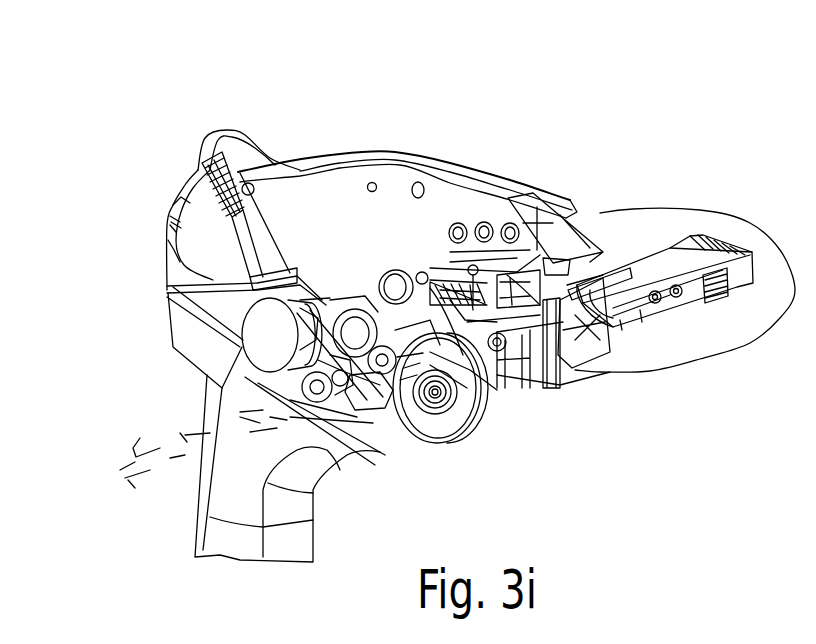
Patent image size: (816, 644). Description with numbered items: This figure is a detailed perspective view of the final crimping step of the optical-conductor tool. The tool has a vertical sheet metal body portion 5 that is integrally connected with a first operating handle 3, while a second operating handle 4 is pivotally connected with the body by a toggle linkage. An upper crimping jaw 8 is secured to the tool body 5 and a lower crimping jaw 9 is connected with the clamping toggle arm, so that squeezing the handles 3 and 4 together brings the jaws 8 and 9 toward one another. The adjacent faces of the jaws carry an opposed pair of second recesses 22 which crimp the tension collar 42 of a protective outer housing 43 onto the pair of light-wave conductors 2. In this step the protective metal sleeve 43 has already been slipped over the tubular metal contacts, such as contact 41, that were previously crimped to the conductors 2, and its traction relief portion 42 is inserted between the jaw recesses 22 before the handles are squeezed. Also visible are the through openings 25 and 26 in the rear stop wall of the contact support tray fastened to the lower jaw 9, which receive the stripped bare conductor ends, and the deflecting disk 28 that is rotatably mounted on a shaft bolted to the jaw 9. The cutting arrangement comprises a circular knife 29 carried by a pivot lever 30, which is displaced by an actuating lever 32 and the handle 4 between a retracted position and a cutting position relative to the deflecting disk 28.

The light-wave conductors 2 is at (185, 435).
The first operating handle 3 is at (193, 215).
The second operating handle 4 is at (243, 482).
The sheet metal body portion 5 is at (298, 160).
The upper crimping jaw 8 is at (578, 240).
The lower crimping jaw 9 is at (580, 365).
The second recesses 22 is at (565, 200).
The through opening 25 is at (421, 276).
The through opening 26 is at (473, 266).
The deflecting disk 28 is at (442, 440).
The circular knife 29 is at (378, 330).
The pivot lever 30 is at (371, 413).
The actuating lever 32 is at (267, 332).
The tubular metal contact 41 is at (722, 284).
The tension collar 42 is at (587, 353).
The protective outer housing 43 is at (645, 273).